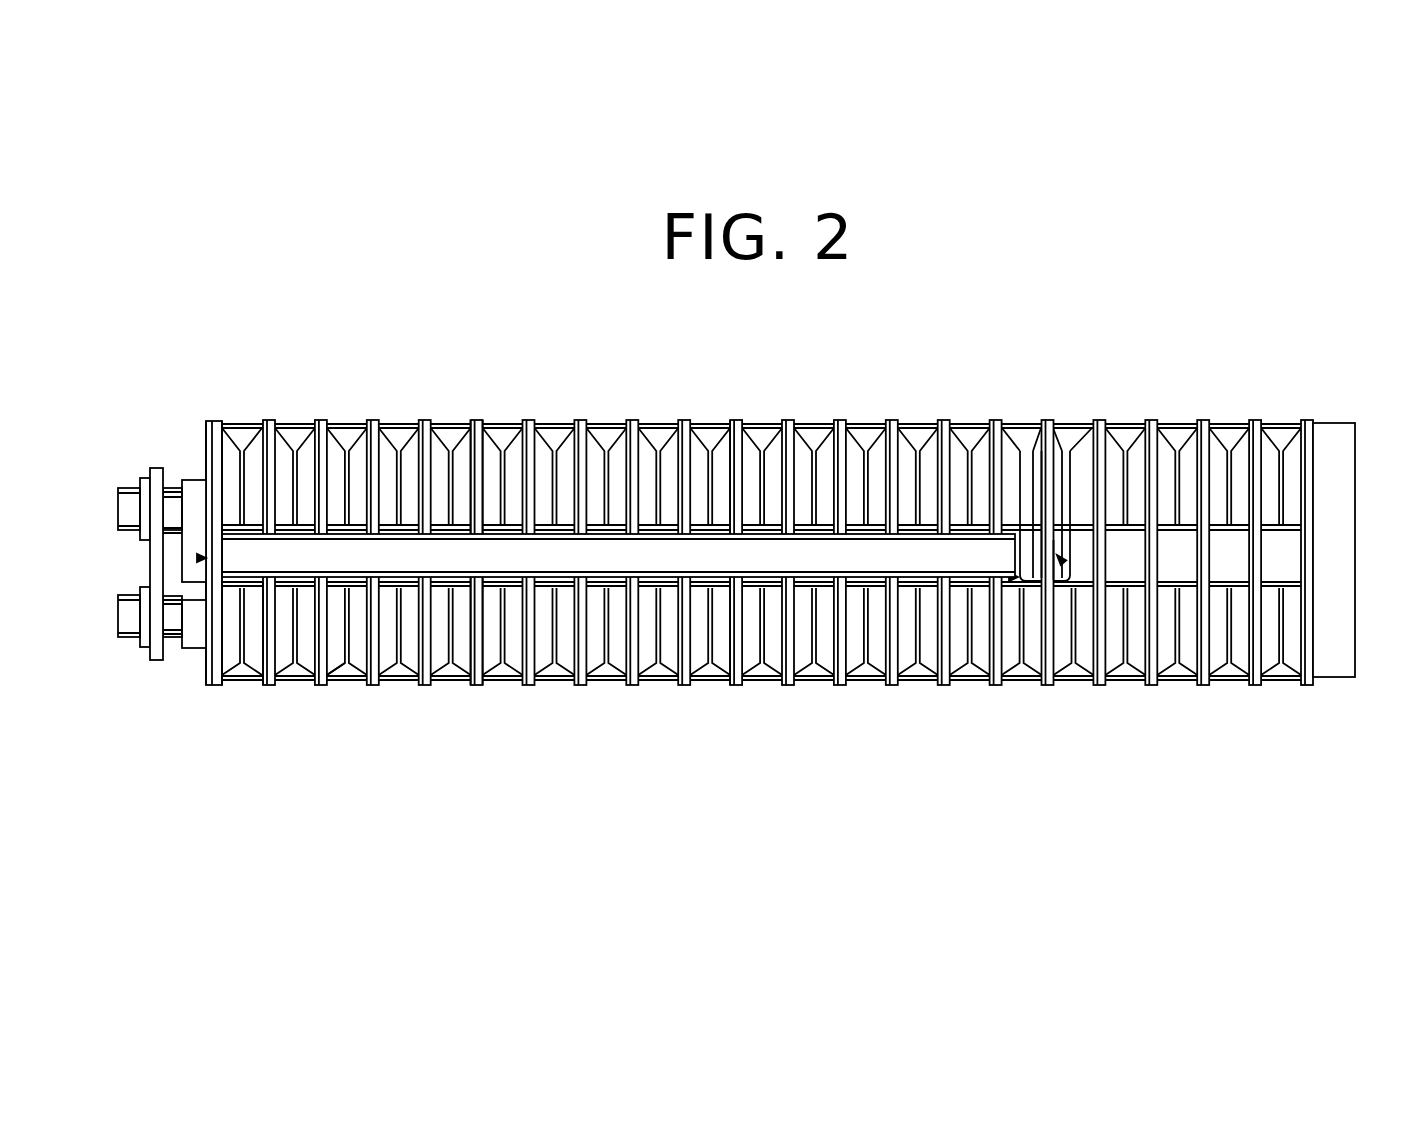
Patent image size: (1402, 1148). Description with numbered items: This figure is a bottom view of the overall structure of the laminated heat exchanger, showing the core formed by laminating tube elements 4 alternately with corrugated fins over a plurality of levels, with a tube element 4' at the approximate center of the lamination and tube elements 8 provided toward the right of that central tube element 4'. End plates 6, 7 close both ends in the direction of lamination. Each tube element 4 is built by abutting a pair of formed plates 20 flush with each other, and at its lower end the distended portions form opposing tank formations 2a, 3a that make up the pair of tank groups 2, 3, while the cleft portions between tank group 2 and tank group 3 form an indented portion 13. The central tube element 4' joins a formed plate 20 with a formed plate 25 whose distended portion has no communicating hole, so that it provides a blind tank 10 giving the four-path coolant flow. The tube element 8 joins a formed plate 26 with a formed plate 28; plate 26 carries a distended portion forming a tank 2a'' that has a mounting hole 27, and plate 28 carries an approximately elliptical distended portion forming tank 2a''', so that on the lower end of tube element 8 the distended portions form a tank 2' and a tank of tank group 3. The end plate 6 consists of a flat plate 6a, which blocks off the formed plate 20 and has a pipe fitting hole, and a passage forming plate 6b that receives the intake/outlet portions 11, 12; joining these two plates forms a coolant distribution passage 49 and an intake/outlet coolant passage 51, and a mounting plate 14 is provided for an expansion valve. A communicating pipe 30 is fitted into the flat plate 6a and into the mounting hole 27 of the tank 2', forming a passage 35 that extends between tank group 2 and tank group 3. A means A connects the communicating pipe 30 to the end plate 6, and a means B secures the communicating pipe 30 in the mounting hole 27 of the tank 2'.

The tank group 2 is at (347, 520).
The distended portion for tank formation 2a is at (304, 440).
The distended portion forming a tank 2a'' is at (1003, 403).
The distended portion forming tank 2a''' is at (1121, 428).
The tank 2' is at (1084, 520).
The tank group 3 is at (357, 670).
The distended portion for tank formation 3a is at (312, 662).
The tube element 4 is at (478, 520).
The tube element 4' is at (738, 520).
The end plate 6 is at (203, 438).
The flat plate 6a is at (222, 422).
The passage forming plate 6b is at (206, 422).
The end plate 7 is at (1355, 502).
The tube element 8 is at (1047, 420).
The blind tank 10 is at (722, 455).
The intake/outlet portion 11 is at (118, 513).
The intake/outlet portion 12 is at (120, 620).
The indented portion 13 is at (262, 583).
The mounting plate 14 is at (157, 663).
The formed plate 20 is at (468, 421).
The formed plate 25 is at (730, 422).
The formed plate 26 is at (1026, 447).
The mounting hole 27 is at (1040, 537).
The formed plate 28 is at (1058, 445).
The communicating pipe 30 is at (856, 555).
The passage 35 is at (595, 588).
The coolant distribution passage 49 is at (190, 652).
The intake/outlet coolant passage 51 is at (195, 490).
The means for connecting the communicating pipe to the end plate A is at (200, 558).
The means for securing the communicating pipe to the mounting hole B is at (1057, 555).